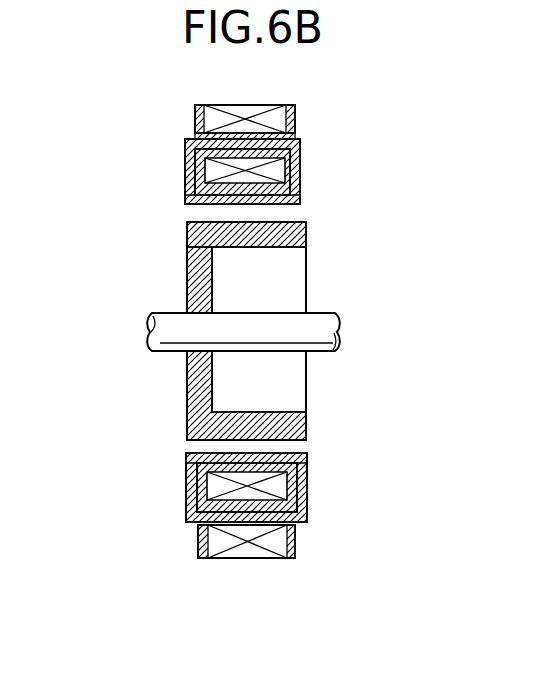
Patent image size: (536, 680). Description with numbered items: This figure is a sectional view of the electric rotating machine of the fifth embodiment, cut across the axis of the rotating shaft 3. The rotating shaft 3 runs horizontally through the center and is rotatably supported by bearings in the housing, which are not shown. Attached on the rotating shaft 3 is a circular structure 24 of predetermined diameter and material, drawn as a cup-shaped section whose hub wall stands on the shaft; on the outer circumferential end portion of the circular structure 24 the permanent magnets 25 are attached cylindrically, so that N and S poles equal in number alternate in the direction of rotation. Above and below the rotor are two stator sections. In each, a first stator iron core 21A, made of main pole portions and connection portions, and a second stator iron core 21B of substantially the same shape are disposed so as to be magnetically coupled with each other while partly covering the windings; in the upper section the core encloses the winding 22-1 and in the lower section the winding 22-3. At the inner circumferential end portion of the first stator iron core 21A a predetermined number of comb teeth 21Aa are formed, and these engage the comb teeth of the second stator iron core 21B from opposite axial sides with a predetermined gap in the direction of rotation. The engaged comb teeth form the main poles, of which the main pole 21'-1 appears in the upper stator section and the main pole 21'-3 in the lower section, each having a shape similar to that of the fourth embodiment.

The first stator iron core 21A is at (184, 162).
The winding 22-1 is at (263, 110).
The main pole 21'-1 is at (329, 158).
The second stator iron core 21B is at (306, 177).
The comb teeth 21Aa is at (300, 197).
The permanent magnets 25 is at (196, 229).
The circular structure 24 is at (201, 273).
The rotating shaft 3 is at (322, 322).
The main pole 21'-3 is at (331, 487).
The winding 22-3 is at (258, 556).